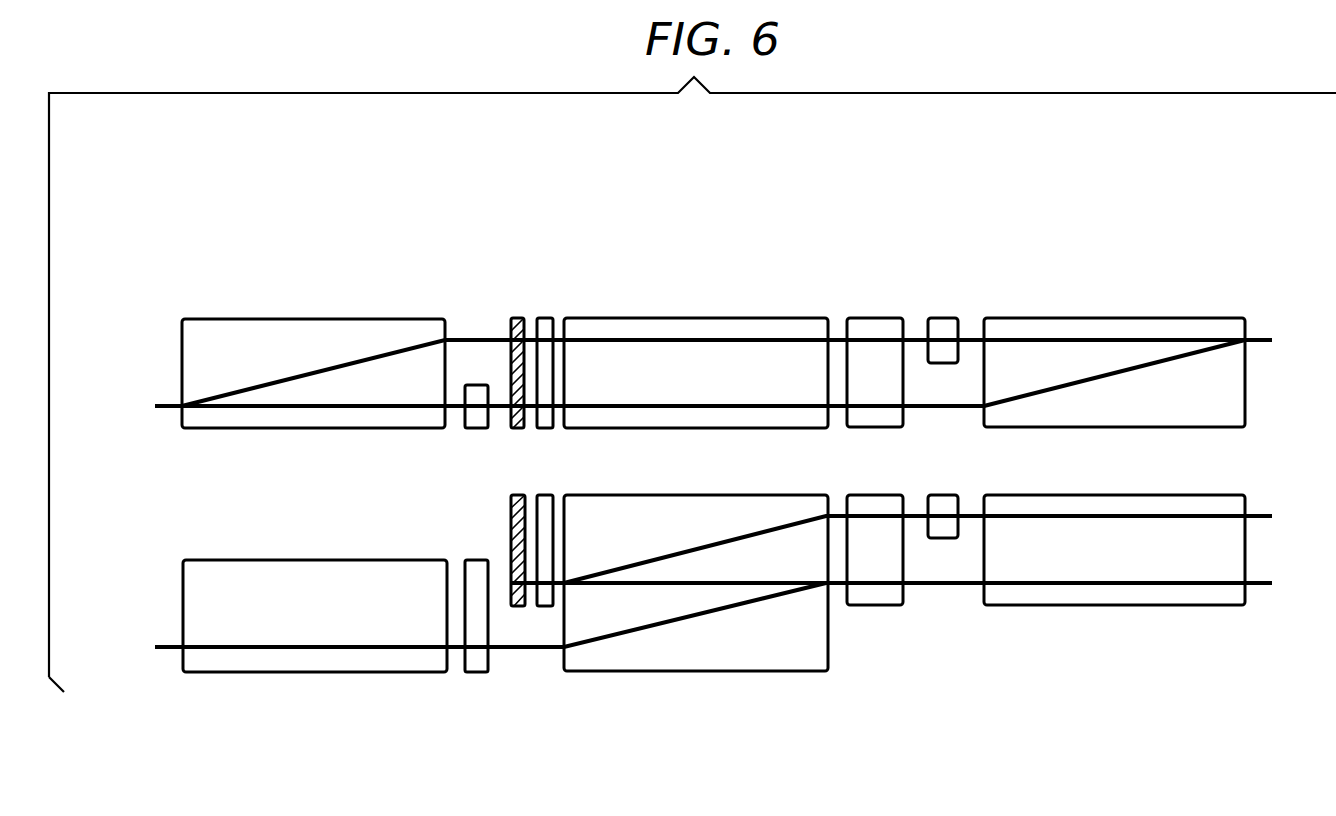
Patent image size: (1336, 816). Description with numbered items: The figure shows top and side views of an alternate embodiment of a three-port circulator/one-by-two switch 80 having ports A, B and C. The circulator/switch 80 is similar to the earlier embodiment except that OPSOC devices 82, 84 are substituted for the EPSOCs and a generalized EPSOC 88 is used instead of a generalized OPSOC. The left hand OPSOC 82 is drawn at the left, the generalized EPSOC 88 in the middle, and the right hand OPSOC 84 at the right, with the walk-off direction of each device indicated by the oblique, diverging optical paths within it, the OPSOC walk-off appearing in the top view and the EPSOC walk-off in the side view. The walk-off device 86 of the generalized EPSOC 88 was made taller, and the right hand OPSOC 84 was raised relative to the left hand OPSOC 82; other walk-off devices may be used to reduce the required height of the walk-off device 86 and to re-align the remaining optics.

The circulator/switch 80 is at (766, 724).
The left hand OPSOC device 82 is at (487, 213).
The right hand OPSOC device 84 is at (923, 213).
The walk-off device 86 is at (786, 318).
The generalized EPSOC 88 is at (504, 213).